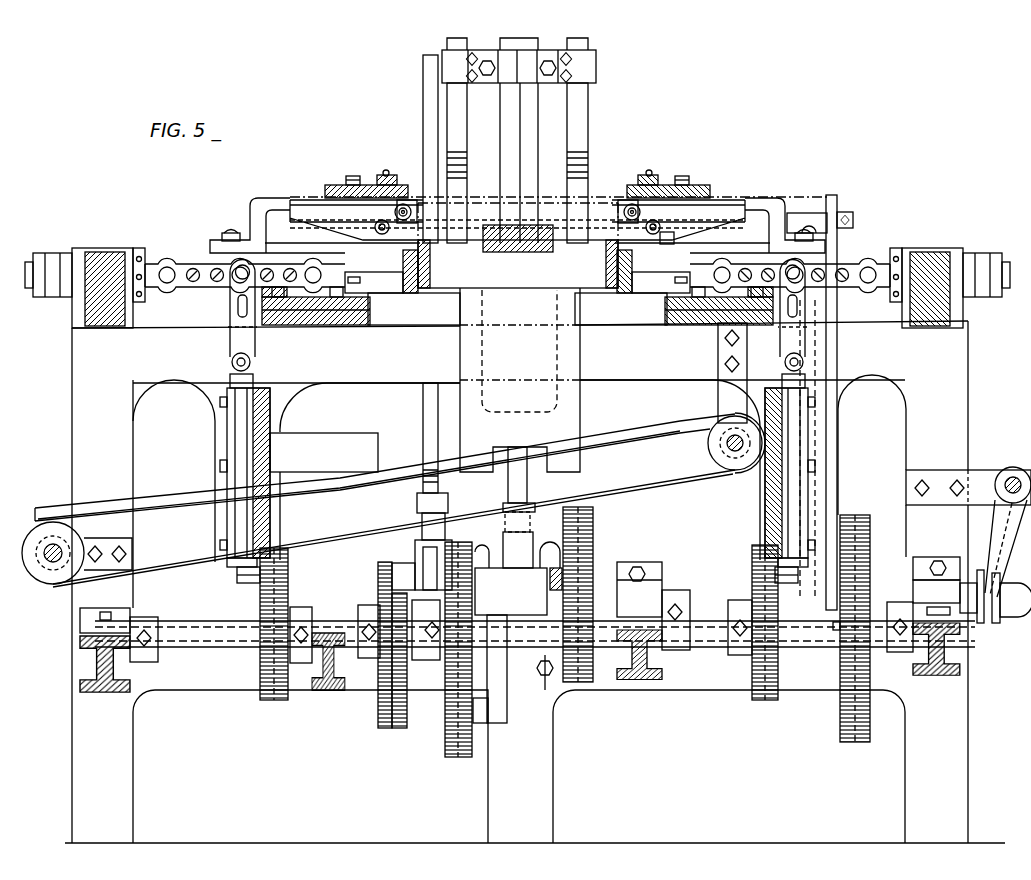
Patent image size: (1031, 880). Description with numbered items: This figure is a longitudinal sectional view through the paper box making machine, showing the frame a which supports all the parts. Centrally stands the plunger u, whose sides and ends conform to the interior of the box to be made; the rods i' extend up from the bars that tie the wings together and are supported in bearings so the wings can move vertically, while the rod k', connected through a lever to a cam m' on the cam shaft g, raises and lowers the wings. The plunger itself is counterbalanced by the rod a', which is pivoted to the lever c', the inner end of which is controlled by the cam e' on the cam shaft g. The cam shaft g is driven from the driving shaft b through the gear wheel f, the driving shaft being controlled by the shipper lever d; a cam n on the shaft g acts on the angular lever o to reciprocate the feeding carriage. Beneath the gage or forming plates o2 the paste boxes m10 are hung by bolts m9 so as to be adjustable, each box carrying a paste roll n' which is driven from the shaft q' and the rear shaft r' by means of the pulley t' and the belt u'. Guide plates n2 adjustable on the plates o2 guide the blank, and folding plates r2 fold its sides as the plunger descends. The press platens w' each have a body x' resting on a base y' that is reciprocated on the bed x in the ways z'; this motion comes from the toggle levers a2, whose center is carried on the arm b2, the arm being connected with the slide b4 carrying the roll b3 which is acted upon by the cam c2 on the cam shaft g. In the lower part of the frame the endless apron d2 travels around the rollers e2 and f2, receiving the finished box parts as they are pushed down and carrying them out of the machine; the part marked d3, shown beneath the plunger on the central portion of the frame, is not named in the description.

The frame a is at (528, 512).
The rod a' is at (532, 507).
The toggle levers a2 is at (205, 262).
The driving shaft b is at (975, 617).
The lever or arm b2 is at (229, 342).
The roll b3 is at (236, 578).
The slide b4 is at (232, 514).
The lever c' is at (517, 632).
The cams c2 is at (276, 700).
The shipper lever d is at (1003, 537).
The endless apron d2 is at (652, 436).
The column d3 is at (570, 412).
The cam e' is at (458, 664).
The roller e2 is at (50, 578).
The gear wheel f is at (850, 742).
The roller f2 is at (712, 450).
The cam shaft g is at (228, 638).
The rods i' is at (525, 140).
The rod k' is at (422, 322).
The cam m' is at (391, 660).
The bolts m9 is at (350, 180).
The paste boxes m10 is at (517, 221).
The cam n is at (581, 613).
The paste roll n' is at (517, 186).
The plates n2 is at (386, 173).
The angular lever o is at (544, 680).
The gage or forming plates o2 is at (368, 190).
The shaft q' is at (512, 248).
The shaft r' is at (807, 210).
The folding plates r2 is at (667, 244).
The pulley t' is at (845, 398).
The plunger u is at (560, 242).
The belt u' is at (836, 450).
The press platens w' is at (526, 290).
The bed x is at (517, 340).
The body x' is at (517, 295).
The base y' is at (517, 322).
The ways z' is at (517, 320).